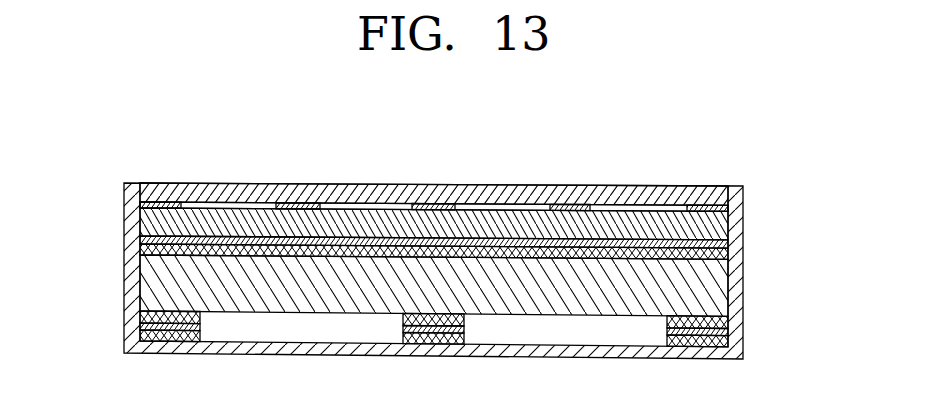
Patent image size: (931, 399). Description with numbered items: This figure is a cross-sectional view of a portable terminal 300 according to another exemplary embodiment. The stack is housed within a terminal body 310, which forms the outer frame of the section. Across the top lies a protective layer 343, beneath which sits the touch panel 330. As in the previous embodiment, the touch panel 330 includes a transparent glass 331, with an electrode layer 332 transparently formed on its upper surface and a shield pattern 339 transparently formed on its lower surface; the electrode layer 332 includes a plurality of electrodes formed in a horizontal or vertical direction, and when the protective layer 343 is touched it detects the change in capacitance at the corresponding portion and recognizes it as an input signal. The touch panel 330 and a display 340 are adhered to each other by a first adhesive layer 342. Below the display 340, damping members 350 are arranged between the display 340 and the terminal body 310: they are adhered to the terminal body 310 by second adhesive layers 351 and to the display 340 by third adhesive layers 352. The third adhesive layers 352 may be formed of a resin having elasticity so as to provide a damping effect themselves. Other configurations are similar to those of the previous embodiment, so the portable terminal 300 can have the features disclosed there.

The portable terminal 300 is at (103, 150).
The terminal body 310 is at (132, 268).
The touch panel 330 is at (812, 187).
The transparent glass 331 is at (730, 223).
The electrode layer 332 is at (726, 208).
The shield pattern 339 is at (727, 246).
The display 340 is at (722, 297).
The first adhesive layer 342 is at (727, 255).
The protective layer 343 is at (655, 195).
The damping members 350 is at (727, 331).
The second adhesive layers 351 is at (727, 343).
The third adhesive layers 352 is at (727, 320).